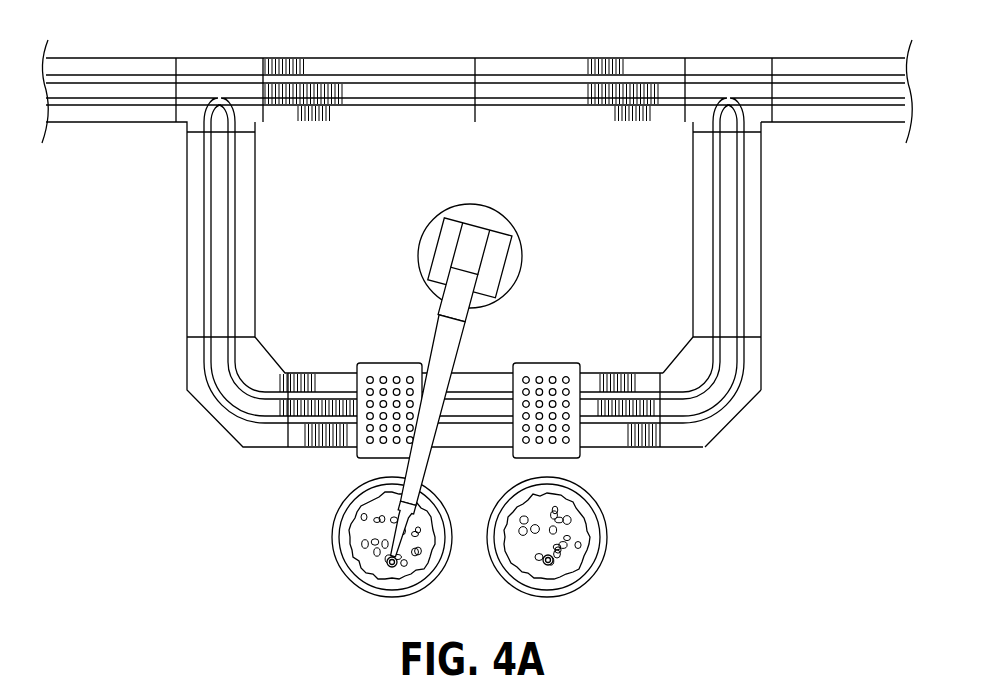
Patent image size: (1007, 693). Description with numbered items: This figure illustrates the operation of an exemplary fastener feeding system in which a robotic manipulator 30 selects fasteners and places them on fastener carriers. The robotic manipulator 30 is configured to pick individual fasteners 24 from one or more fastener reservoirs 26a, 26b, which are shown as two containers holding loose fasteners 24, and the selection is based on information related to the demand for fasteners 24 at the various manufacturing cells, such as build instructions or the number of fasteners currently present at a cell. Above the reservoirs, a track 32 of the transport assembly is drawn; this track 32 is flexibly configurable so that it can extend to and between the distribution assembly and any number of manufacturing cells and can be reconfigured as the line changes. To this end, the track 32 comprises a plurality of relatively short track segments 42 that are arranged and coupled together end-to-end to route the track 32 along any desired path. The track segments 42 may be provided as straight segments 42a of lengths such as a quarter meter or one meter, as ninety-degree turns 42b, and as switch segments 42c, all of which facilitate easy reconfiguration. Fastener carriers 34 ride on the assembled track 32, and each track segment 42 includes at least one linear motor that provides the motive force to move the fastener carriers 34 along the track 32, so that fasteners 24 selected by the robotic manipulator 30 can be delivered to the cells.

The fastener 24 is at (396, 575).
The fastener reservoir 26a is at (357, 589).
The fastener reservoir 26b is at (583, 590).
The robotic manipulator 30 is at (412, 247).
The track 32 is at (438, 57).
The fastener carrier 34 is at (390, 363).
The track segment 42 is at (631, 57).
The straight segment 42a is at (763, 262).
The 90-degree turn 42b is at (725, 426).
The switch segment 42c is at (729, 57).